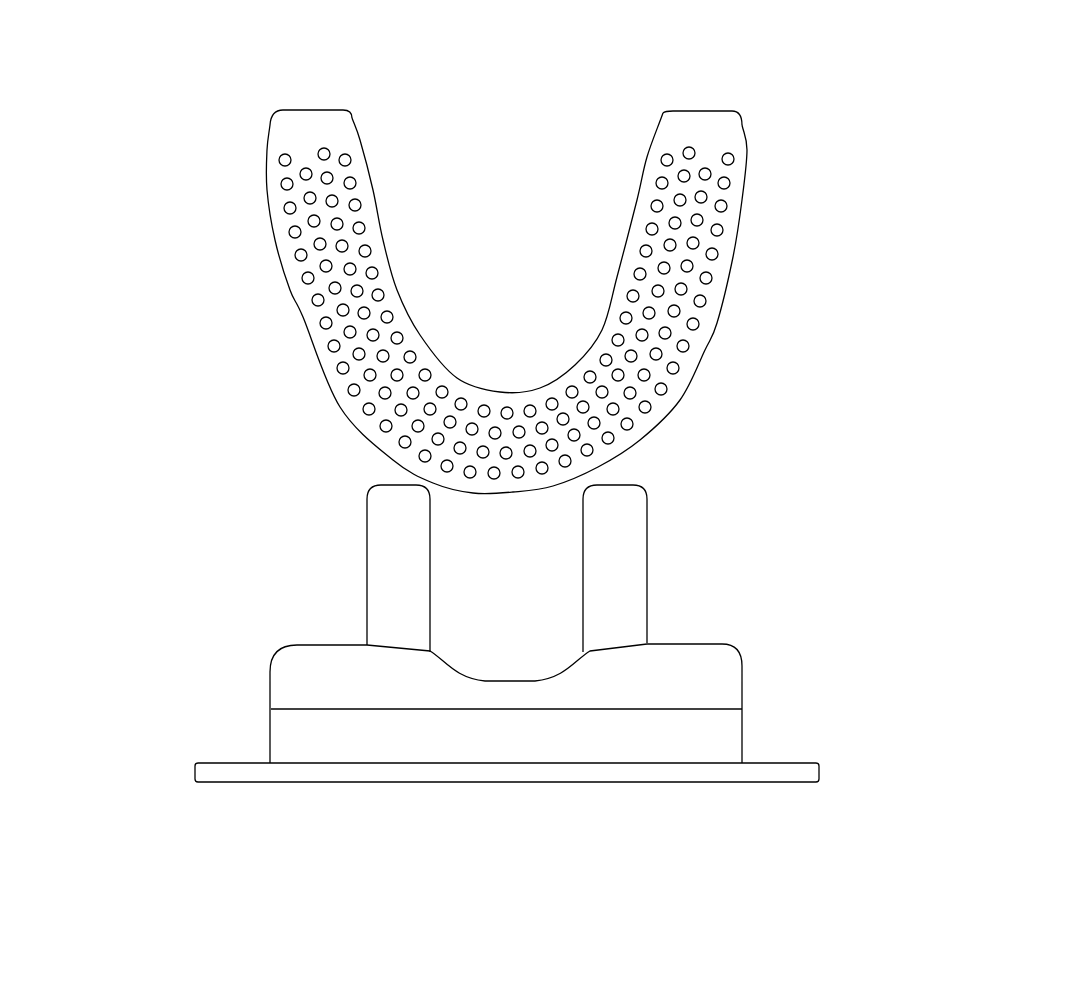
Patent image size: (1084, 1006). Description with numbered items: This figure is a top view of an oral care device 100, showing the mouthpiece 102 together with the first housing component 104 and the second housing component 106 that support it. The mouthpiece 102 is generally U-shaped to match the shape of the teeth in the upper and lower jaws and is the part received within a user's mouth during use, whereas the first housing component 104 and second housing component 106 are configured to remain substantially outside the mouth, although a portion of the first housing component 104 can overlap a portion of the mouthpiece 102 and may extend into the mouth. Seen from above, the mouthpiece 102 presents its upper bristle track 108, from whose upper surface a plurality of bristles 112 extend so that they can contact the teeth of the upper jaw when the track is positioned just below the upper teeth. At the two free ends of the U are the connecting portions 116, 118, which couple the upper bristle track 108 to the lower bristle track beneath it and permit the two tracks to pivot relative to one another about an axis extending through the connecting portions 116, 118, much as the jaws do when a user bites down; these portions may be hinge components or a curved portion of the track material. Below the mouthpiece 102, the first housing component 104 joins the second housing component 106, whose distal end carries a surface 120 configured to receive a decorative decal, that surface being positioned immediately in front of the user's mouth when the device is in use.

The device 100 is at (879, 117).
The mouthpiece 102 is at (171, 143).
The first housing component 104 is at (754, 462).
The second housing component 106 is at (818, 687).
The upper bristle track 108 is at (285, 225).
The bristles 112 is at (388, 317).
The connecting portion 116 is at (335, 120).
The connecting portion 118 is at (698, 115).
The surface 120 is at (725, 780).